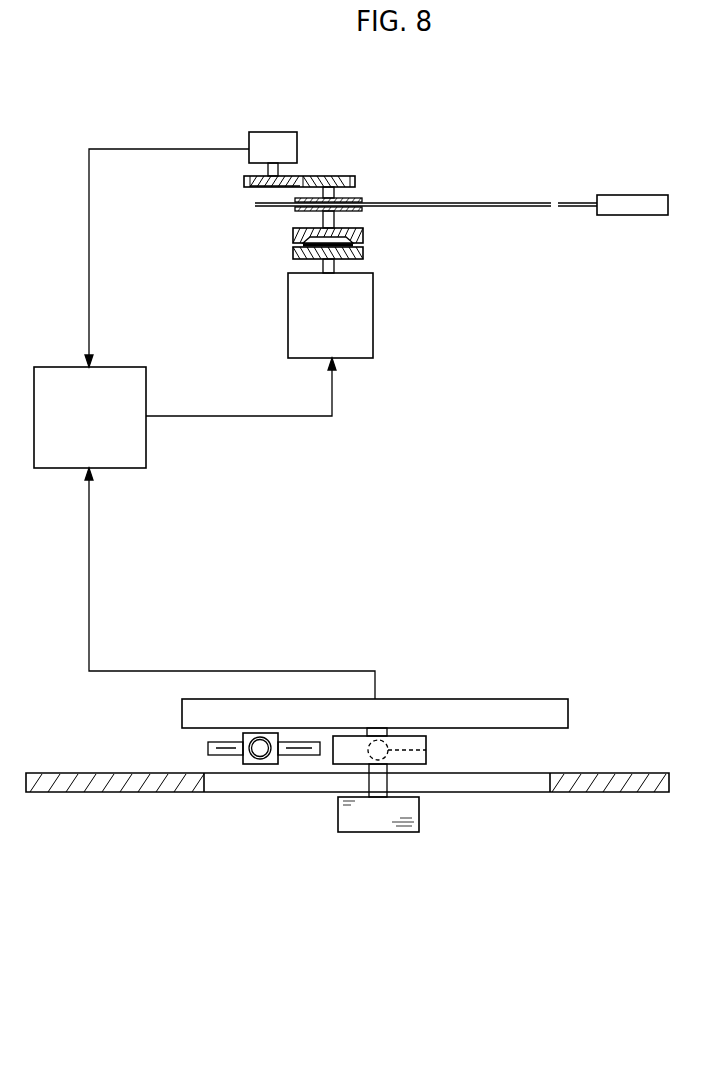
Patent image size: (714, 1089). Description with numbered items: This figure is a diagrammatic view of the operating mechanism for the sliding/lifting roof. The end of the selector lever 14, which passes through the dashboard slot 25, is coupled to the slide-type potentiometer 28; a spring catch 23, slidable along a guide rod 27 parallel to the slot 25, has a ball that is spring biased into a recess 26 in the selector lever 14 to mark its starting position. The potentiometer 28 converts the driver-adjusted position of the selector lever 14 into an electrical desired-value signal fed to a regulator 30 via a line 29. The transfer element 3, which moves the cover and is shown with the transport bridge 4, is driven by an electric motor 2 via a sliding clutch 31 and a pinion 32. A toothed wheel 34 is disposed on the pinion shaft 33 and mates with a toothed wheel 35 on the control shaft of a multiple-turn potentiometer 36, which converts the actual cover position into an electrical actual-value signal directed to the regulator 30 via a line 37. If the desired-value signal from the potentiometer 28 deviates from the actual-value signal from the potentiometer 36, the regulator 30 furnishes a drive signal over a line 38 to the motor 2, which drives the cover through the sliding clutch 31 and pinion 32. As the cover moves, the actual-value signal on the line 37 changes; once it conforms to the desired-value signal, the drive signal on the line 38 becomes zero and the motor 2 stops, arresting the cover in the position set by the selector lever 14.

The electric motor 2 is at (373, 305).
The transfer element 3 is at (465, 207).
The transport bridge 4 is at (632, 203).
The selector lever 14 is at (372, 820).
The spring catch 23 is at (247, 765).
The slot 25 is at (470, 784).
The recess 26 is at (426, 750).
The guide rod 27 is at (298, 753).
The slide-type potentiometer 28 is at (473, 712).
The line 29 is at (91, 596).
The regulator 30 is at (136, 444).
The sliding clutch 31 is at (293, 235).
The pinion 32 is at (350, 200).
The pinion shaft 33 is at (332, 217).
The toothed wheel 34 is at (330, 180).
The toothed wheel 35 is at (258, 187).
The multiple-turn potentiometer 36 is at (270, 140).
The line 37 is at (89, 262).
The line 38 is at (332, 395).